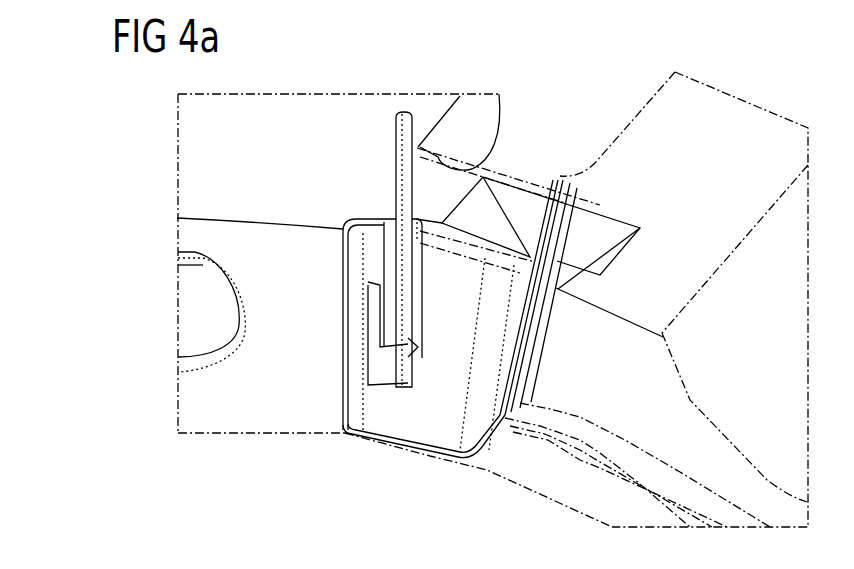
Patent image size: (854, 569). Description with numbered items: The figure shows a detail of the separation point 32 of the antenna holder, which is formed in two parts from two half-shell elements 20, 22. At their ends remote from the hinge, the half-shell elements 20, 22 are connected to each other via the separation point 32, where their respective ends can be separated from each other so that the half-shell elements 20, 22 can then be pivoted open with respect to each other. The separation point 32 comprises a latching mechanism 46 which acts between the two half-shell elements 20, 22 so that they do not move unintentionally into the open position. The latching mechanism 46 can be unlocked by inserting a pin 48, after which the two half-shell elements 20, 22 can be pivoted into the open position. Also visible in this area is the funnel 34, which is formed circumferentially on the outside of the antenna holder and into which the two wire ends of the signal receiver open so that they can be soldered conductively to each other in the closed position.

The half-shell element 20 is at (288, 103).
The half-shell element 22 is at (736, 118).
The separation point 32 is at (532, 219).
The funnel 34 is at (538, 174).
The latching mechanism 46 is at (370, 366).
The pin 48 is at (404, 113).